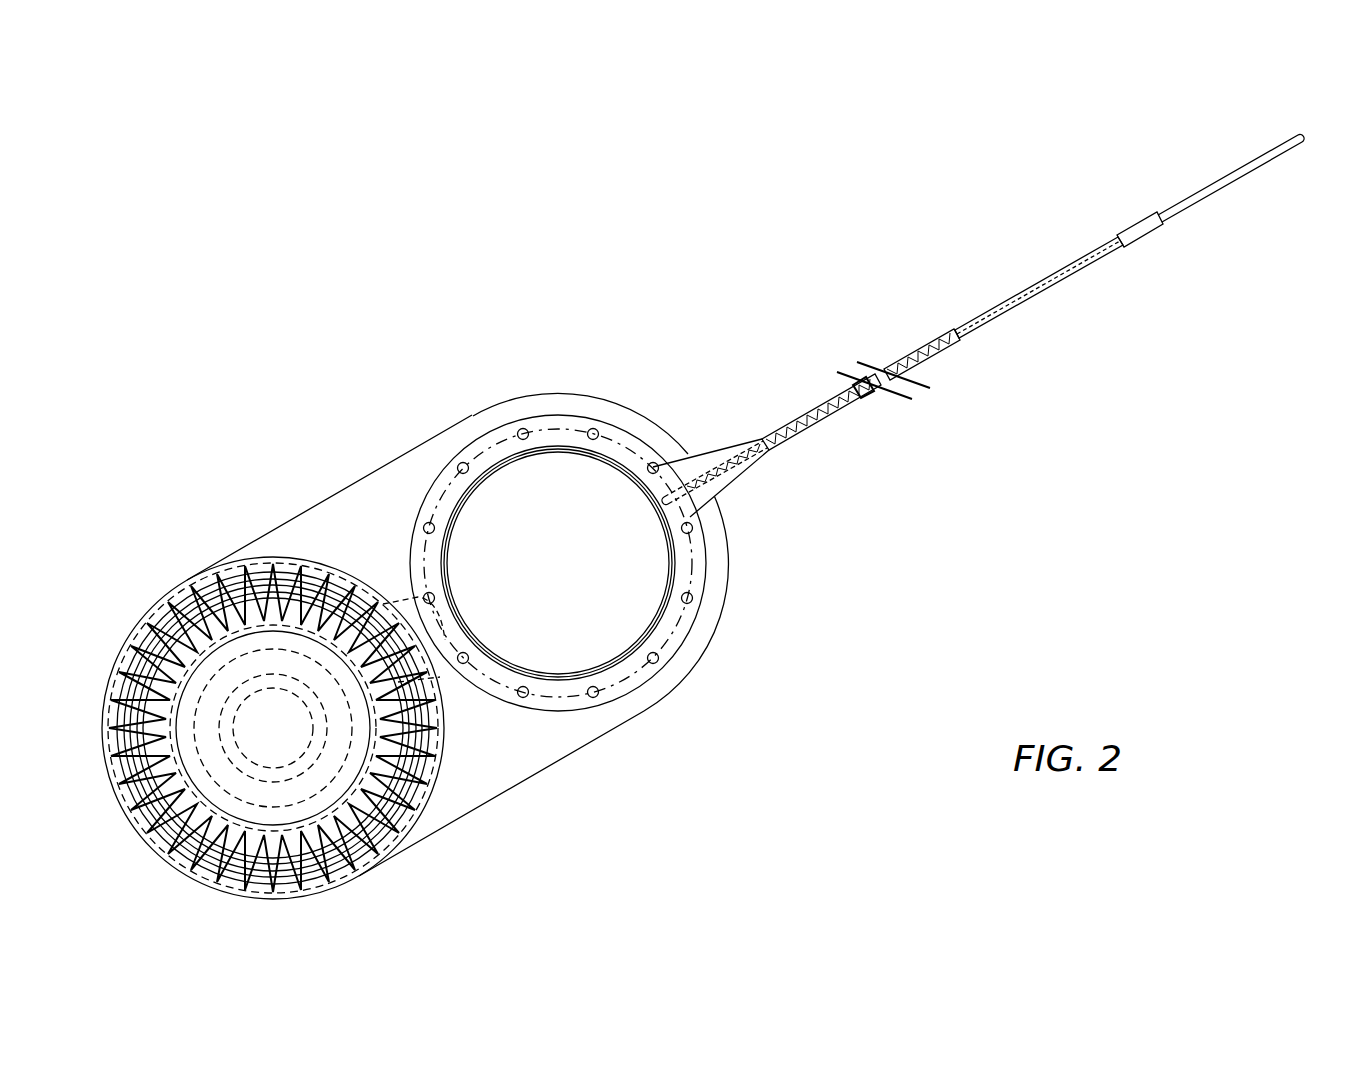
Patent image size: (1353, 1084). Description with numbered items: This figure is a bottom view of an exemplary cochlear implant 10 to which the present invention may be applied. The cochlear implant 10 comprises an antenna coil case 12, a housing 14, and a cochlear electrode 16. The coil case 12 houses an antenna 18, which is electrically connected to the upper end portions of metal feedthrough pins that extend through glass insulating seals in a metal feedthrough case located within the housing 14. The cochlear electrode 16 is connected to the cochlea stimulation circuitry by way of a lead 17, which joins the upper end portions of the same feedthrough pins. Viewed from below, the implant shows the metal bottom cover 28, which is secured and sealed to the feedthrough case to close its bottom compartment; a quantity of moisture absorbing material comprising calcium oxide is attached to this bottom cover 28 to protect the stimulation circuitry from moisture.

The cochlear implant 10 is at (645, 292).
The antenna coil case 12 is at (158, 582).
The housing 14 is at (485, 388).
The cochlear electrode 16 is at (1060, 250).
The lead 17 is at (785, 448).
The antenna 18 is at (380, 852).
The metal bottom cover 28 is at (603, 668).